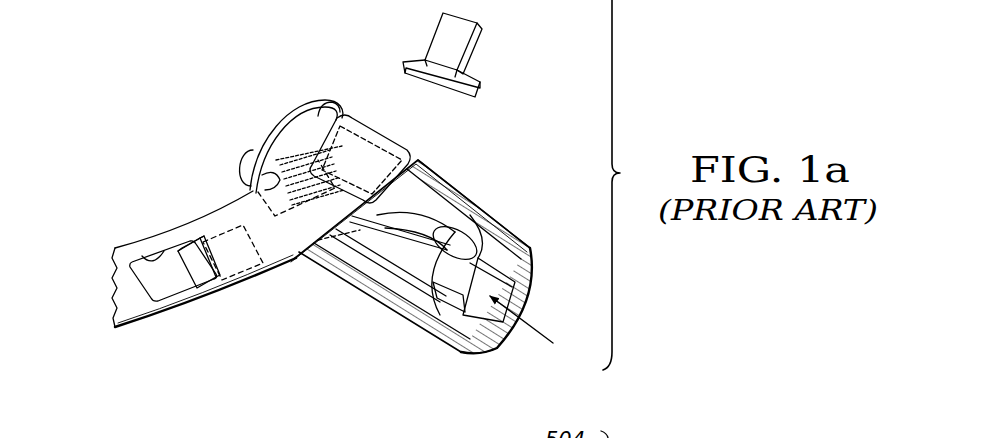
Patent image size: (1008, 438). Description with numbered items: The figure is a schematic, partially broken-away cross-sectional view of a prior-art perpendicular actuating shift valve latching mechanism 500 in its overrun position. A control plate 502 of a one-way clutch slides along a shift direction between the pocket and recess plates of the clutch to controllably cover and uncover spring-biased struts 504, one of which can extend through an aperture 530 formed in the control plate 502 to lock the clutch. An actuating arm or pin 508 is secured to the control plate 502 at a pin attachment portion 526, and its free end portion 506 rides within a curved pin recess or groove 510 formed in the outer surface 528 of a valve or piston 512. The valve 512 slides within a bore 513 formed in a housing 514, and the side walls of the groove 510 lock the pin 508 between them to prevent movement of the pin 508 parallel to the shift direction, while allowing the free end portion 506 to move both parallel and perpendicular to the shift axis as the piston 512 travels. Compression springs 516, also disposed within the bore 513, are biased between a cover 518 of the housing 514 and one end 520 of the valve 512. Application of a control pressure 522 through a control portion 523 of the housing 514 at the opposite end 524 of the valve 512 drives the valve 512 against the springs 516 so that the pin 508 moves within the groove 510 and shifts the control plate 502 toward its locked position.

The latching mechanism 500 is at (412, 180).
The control plate 502 is at (183, 313).
The struts 504 is at (183, 270).
The free end portion 506 is at (340, 275).
The actuating arm 508 is at (378, 214).
The curved pin recess 510 is at (430, 226).
The valve 512 is at (410, 262).
The bore 513 is at (474, 230).
The housing 514 is at (530, 248).
The compression springs 516 is at (307, 148).
The cover 518 is at (280, 118).
The one end 520 is at (283, 256).
The control pressure 522 is at (553, 343).
The control portion 523 is at (533, 300).
The opposite end 524 is at (463, 348).
The pin attachment portion 526 is at (357, 114).
The outer surface 528 is at (383, 270).
The aperture 530 is at (140, 260).